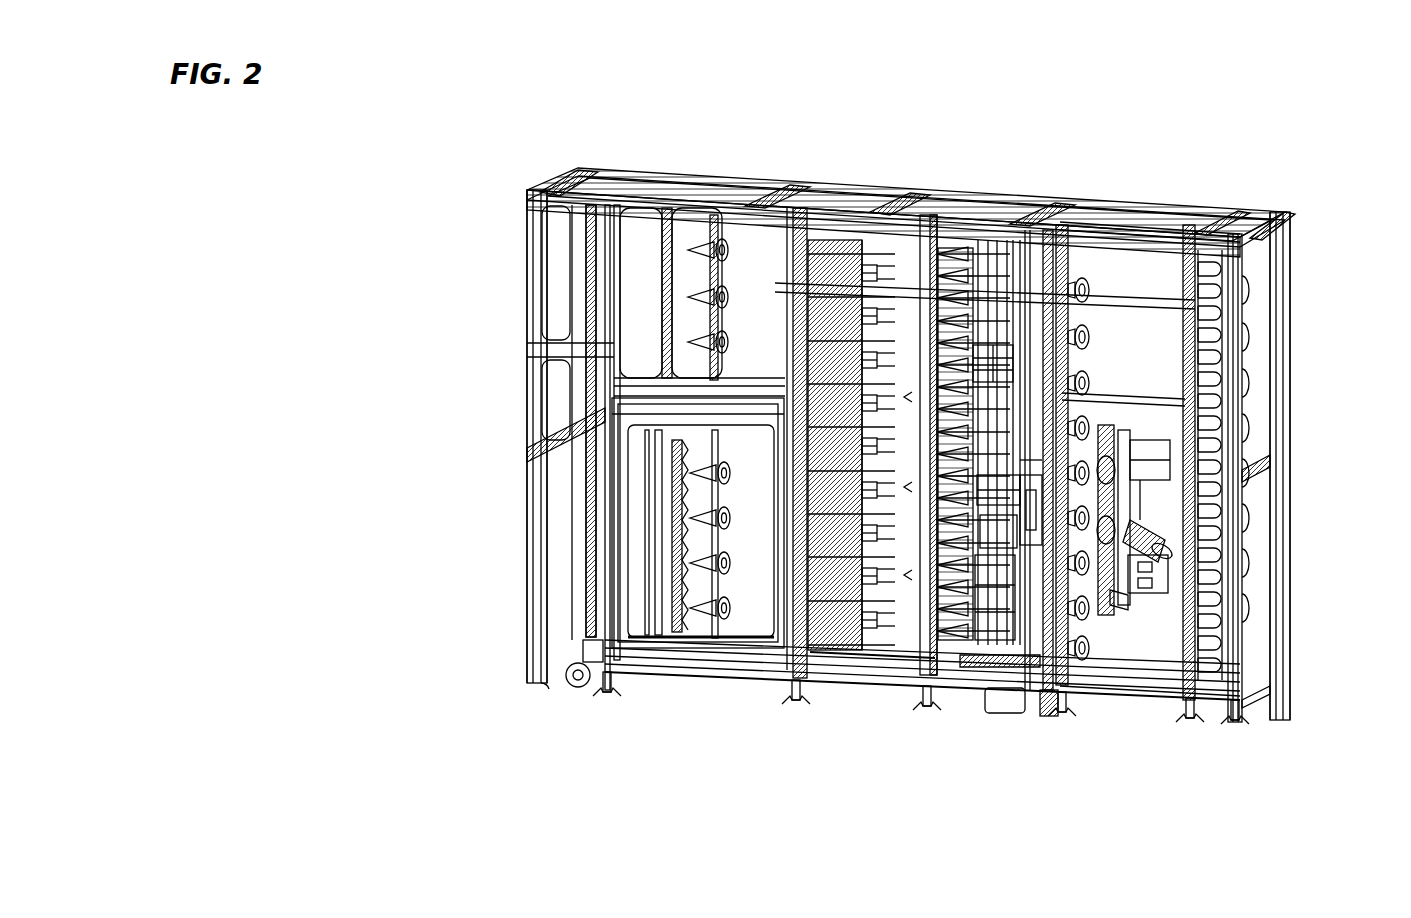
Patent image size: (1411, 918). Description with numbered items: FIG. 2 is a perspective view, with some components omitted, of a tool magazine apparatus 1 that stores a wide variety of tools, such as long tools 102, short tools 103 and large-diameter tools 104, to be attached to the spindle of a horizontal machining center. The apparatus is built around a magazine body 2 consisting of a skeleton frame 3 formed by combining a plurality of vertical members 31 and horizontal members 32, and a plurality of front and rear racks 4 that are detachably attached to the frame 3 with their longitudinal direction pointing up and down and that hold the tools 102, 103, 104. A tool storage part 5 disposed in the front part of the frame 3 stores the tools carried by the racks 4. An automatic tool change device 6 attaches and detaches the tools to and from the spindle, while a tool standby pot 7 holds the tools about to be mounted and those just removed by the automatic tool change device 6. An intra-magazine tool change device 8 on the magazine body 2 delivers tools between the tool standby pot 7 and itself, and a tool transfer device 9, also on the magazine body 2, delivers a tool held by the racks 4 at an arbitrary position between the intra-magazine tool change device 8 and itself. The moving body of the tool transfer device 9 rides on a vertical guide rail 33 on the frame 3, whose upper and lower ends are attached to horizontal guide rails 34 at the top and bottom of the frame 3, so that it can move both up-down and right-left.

The tool magazine apparatus 1 is at (1016, 188).
The magazine body 2 is at (527, 242).
The frame 3 is at (527, 378).
The rack 4 is at (838, 213).
The tool storage part 5 is at (703, 640).
The automatic tool change device 6 is at (1145, 435).
The tool standby pot 7 is at (1124, 430).
The intra-magazine tool change device 8 is at (1100, 428).
The tool transfer device 9 is at (985, 695).
The vertical member 31 is at (577, 565).
The horizontal member 32 is at (556, 178).
The vertical guide rail 33 is at (1040, 700).
The horizontal guide rail 34 is at (1160, 202).
The long tool 102 is at (966, 640).
The short tool 103 is at (1225, 437).
The large-diameter tool 104 is at (727, 335).